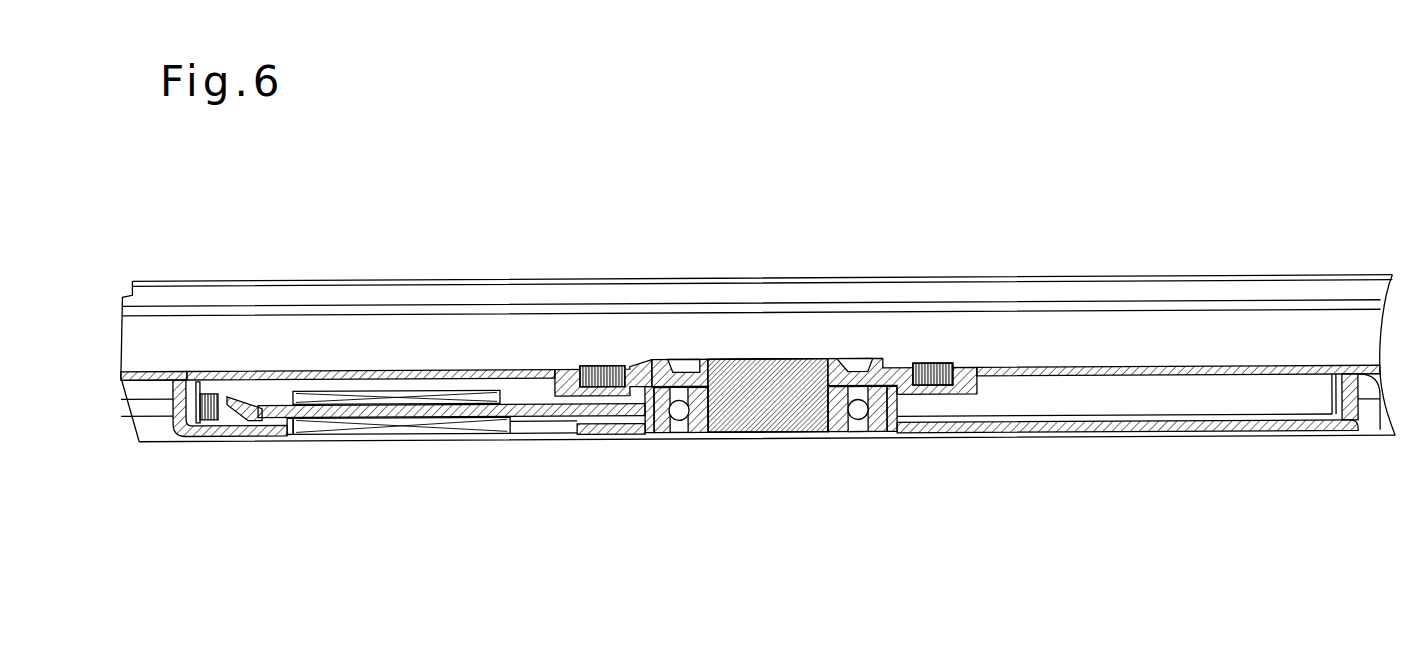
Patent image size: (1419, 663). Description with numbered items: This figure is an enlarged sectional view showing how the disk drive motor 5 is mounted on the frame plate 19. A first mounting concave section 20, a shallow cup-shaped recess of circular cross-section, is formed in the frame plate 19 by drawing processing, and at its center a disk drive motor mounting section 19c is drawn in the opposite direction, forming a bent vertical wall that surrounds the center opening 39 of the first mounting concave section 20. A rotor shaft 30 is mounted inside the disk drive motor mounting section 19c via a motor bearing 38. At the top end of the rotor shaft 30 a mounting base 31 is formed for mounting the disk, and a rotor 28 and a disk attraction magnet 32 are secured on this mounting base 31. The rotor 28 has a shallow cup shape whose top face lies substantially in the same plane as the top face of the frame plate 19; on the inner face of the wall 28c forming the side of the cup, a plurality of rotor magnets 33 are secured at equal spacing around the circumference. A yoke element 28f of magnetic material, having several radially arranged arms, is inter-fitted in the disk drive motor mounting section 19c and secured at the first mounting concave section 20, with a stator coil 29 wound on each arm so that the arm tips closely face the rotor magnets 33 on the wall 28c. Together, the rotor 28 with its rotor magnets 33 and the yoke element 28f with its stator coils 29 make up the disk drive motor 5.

The disk drive motor 5 is at (841, 341).
The frame plate 19 is at (1367, 431).
The disk drive motor mounting section 19c is at (646, 432).
The first mounting concave section 20 is at (1090, 431).
The rotor 28 is at (517, 370).
The wall surrounding the rotor 28c is at (191, 371).
The yoke element 28f is at (263, 418).
The stator coil 29 is at (327, 427).
The rotor shaft 30 is at (770, 407).
The mounting base 31 is at (897, 362).
The disk attraction magnet 32 is at (930, 363).
The rotor magnets 33 is at (206, 389).
The motor bearing 38 is at (679, 422).
The center opening 39 is at (868, 427).